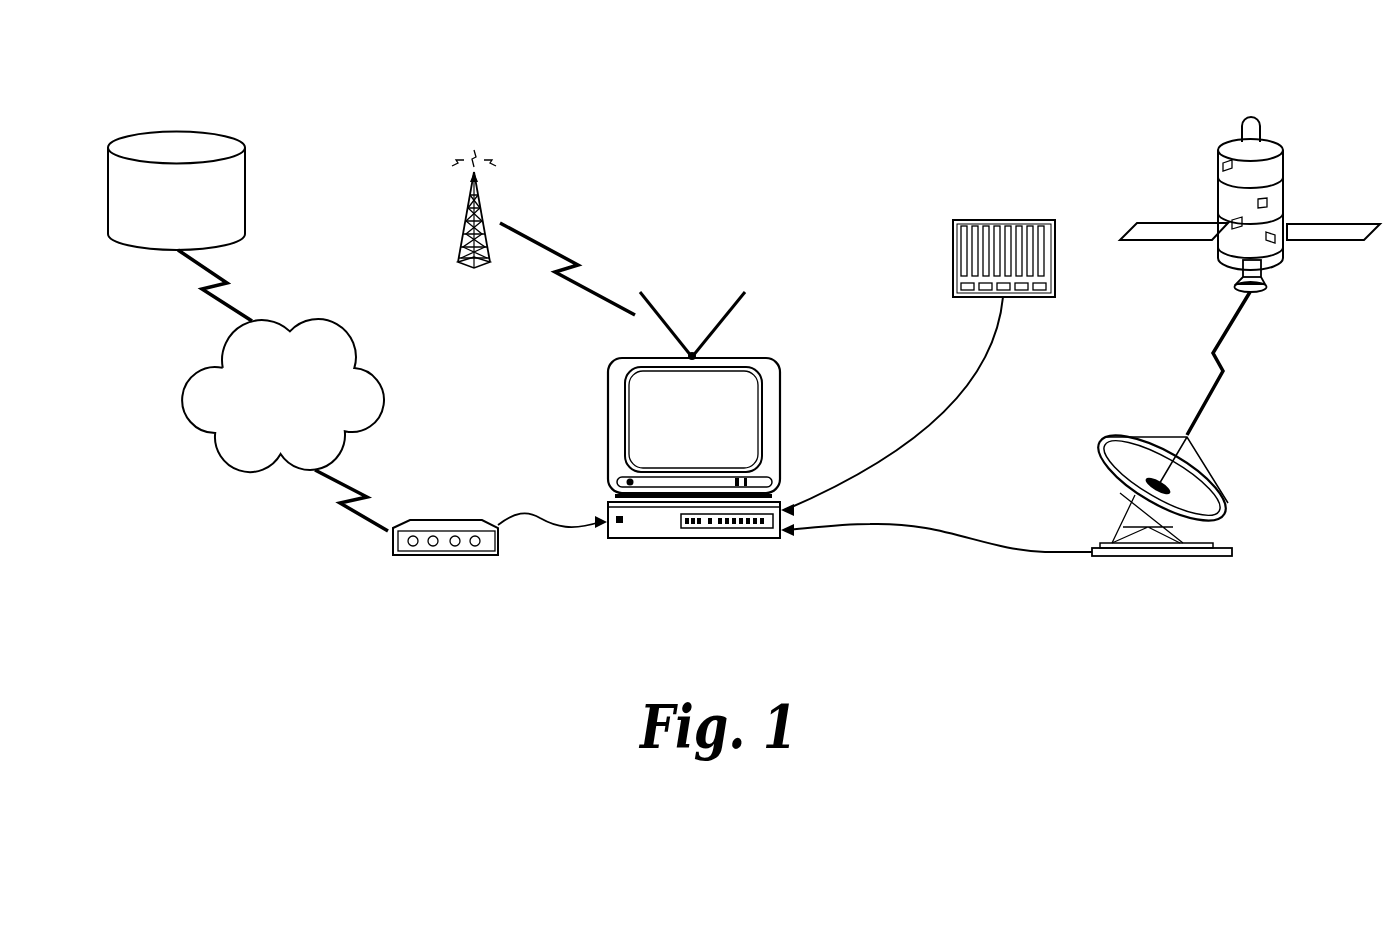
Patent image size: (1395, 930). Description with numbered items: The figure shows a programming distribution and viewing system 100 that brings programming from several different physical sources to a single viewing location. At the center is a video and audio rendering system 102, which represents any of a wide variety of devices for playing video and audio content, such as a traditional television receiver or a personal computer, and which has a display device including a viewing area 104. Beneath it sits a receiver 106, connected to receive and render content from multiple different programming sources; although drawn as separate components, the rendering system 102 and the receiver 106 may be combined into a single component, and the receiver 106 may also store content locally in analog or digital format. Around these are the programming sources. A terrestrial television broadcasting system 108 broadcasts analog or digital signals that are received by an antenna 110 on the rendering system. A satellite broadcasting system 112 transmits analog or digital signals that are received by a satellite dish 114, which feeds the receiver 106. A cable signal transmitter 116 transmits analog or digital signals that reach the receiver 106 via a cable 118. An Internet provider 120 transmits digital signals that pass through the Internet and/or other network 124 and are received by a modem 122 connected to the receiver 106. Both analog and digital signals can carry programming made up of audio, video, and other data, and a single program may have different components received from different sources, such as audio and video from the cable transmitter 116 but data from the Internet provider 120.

The programming distribution and viewing system 100 is at (642, 96).
The video and audio rendering system 102 is at (755, 375).
The viewing area 104 is at (743, 413).
The receiver 106 is at (643, 535).
The terrestrial television broadcasting system 108 is at (467, 193).
The antenna 110 is at (655, 310).
The satellite broadcasting system 112 is at (1222, 150).
The satellite dish 114 is at (1227, 493).
The cable signal transmitter 116 is at (1003, 220).
The cable 118 is at (933, 420).
The Internet provider 120 is at (195, 142).
The modem 122 is at (447, 518).
The Internet (and/or other network) 124 is at (240, 452).